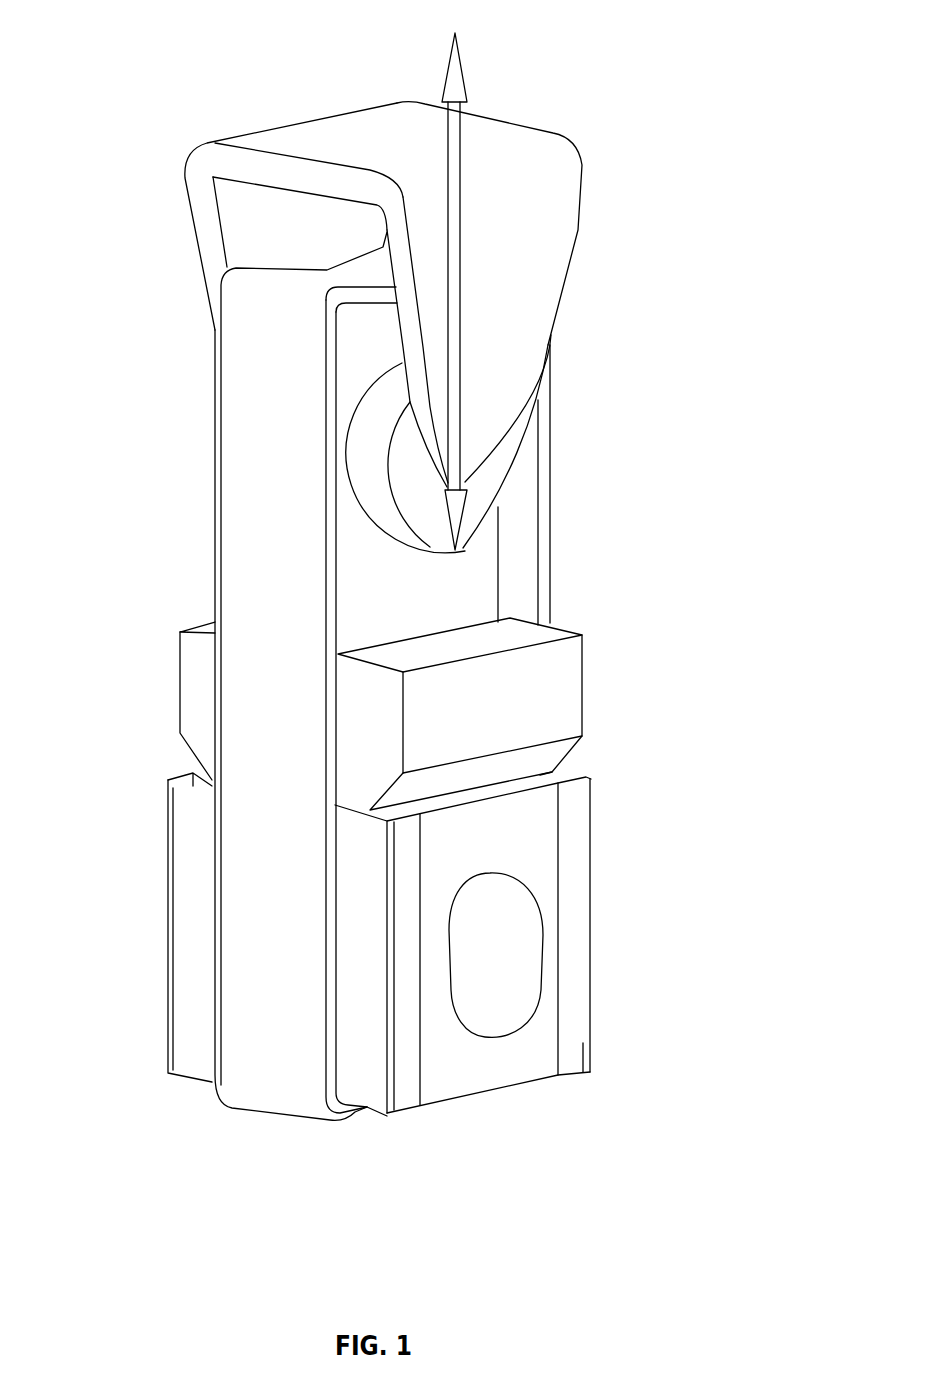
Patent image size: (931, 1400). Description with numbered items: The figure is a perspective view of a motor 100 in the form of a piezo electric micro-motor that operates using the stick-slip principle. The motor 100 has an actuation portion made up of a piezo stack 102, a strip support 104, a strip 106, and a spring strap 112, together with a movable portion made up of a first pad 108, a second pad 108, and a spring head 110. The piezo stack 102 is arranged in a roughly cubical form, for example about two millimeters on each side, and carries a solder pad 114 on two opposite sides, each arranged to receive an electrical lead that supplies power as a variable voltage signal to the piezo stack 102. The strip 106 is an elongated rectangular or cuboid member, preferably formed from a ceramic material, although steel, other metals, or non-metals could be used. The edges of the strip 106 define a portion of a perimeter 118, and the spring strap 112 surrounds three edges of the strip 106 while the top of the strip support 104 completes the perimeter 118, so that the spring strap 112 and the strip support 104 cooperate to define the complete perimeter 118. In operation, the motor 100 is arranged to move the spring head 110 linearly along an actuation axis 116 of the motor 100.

The motor 100 is at (746, 80).
The piezo stack 102 is at (527, 857).
The strip support 104 is at (197, 688).
The strip 106 is at (407, 597).
The pad 108 is at (473, 503).
The spring head 110 is at (513, 300).
The spring strap 112 is at (277, 430).
The solder pad 114 is at (501, 948).
The actuation axis 116 is at (463, 102).
The perimeter 118 is at (497, 605).